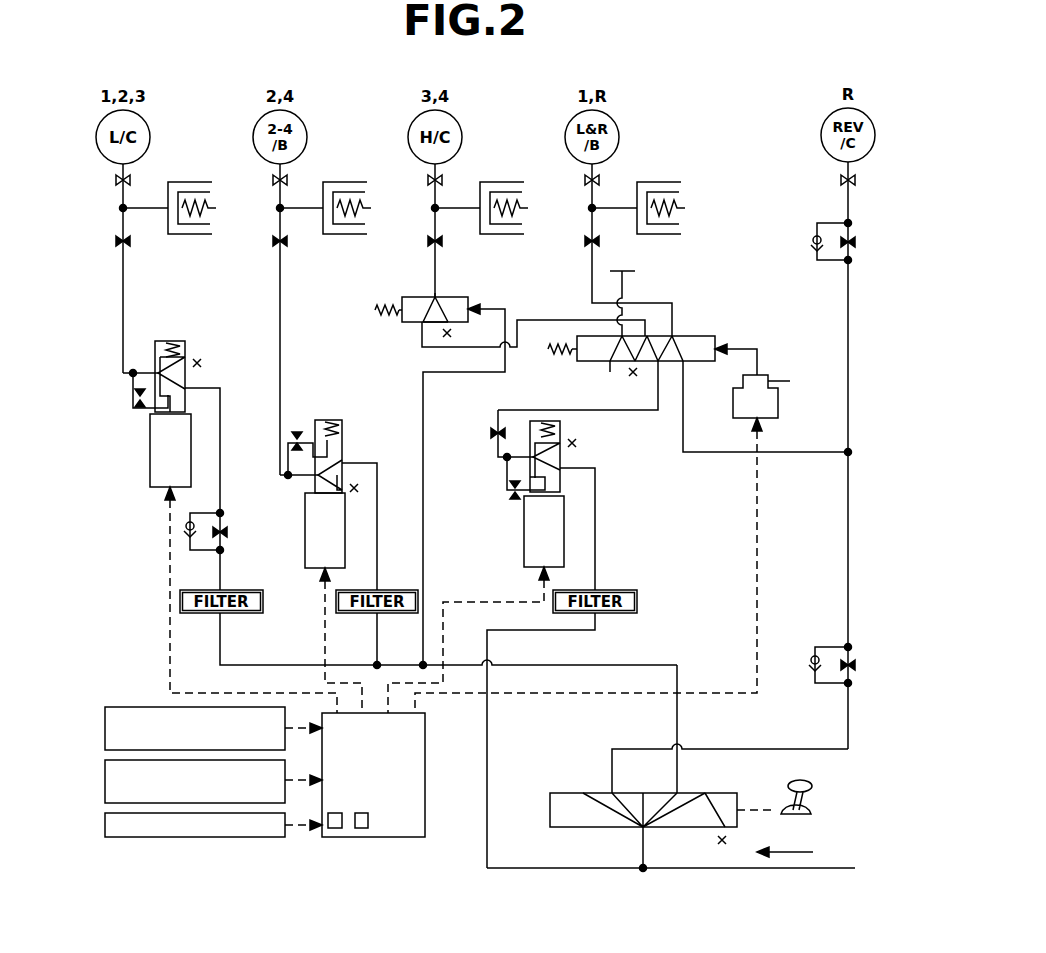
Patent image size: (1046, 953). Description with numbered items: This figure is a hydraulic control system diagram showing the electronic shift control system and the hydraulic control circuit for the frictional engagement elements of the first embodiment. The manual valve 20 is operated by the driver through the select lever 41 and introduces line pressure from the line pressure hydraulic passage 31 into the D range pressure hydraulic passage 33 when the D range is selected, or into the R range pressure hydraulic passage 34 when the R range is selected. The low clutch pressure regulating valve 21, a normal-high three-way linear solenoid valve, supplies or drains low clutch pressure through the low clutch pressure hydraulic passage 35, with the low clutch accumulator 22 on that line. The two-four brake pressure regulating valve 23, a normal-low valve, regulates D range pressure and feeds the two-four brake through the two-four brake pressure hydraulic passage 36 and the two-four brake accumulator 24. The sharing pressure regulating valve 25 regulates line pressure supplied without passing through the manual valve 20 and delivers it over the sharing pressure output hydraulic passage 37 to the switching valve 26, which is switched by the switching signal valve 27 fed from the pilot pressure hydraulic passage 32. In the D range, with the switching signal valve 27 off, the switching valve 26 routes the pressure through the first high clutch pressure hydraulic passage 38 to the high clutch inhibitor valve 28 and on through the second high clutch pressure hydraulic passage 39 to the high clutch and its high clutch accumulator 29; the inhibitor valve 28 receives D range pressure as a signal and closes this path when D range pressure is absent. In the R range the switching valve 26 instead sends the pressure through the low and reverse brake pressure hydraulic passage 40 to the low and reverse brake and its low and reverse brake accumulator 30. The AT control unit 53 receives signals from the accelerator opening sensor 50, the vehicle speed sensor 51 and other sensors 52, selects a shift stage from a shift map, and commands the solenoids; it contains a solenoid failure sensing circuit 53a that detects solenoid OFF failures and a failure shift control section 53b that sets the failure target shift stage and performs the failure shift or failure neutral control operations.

The manual valve 20 is at (565, 793).
The low clutch pressure regulating valve 21 is at (150, 459).
The low clutch accumulator 22 is at (190, 183).
The 2-4 brake pressure regulating valve 23 is at (305, 537).
The 2-4 brake accumulator 24 is at (345, 183).
The sharing pressure regulating valve 25 is at (524, 537).
The switching valve 26 is at (696, 363).
The switching signal valve 27 is at (778, 406).
The high clutch inhibitor valve 28 is at (418, 297).
The high clutch accumulator 29 is at (502, 183).
The low and reverse brake accumulator 30 is at (659, 183).
The line pressure hydraulic passage 31 is at (717, 869).
The pilot pressure hydraulic passage 32 is at (608, 373).
The D range pressure hydraulic passage 33 is at (655, 664).
The R range pressure hydraulic passage 34 is at (760, 749).
The low clutch pressure hydraulic passage 35 is at (123, 308).
The 2-4 brake pressure hydraulic passage 36 is at (280, 308).
The sharing pressure output hydraulic passage 37 is at (618, 412).
The first high clutch pressure hydraulic passage 38 is at (537, 322).
The second high clutch pressure hydraulic passage 39 is at (437, 282).
The low and reverse brake pressure hydraulic passage 40 is at (593, 278).
The select lever 41 is at (812, 782).
The accelerator opening sensor 50 is at (105, 730).
The vehicle speed sensor 51 is at (105, 782).
The other sensors 52 is at (105, 827).
The AT control unit 53 is at (419, 838).
The solenoid failure sensing circuit 53a is at (334, 830).
The failure shift control section 53b is at (363, 830).